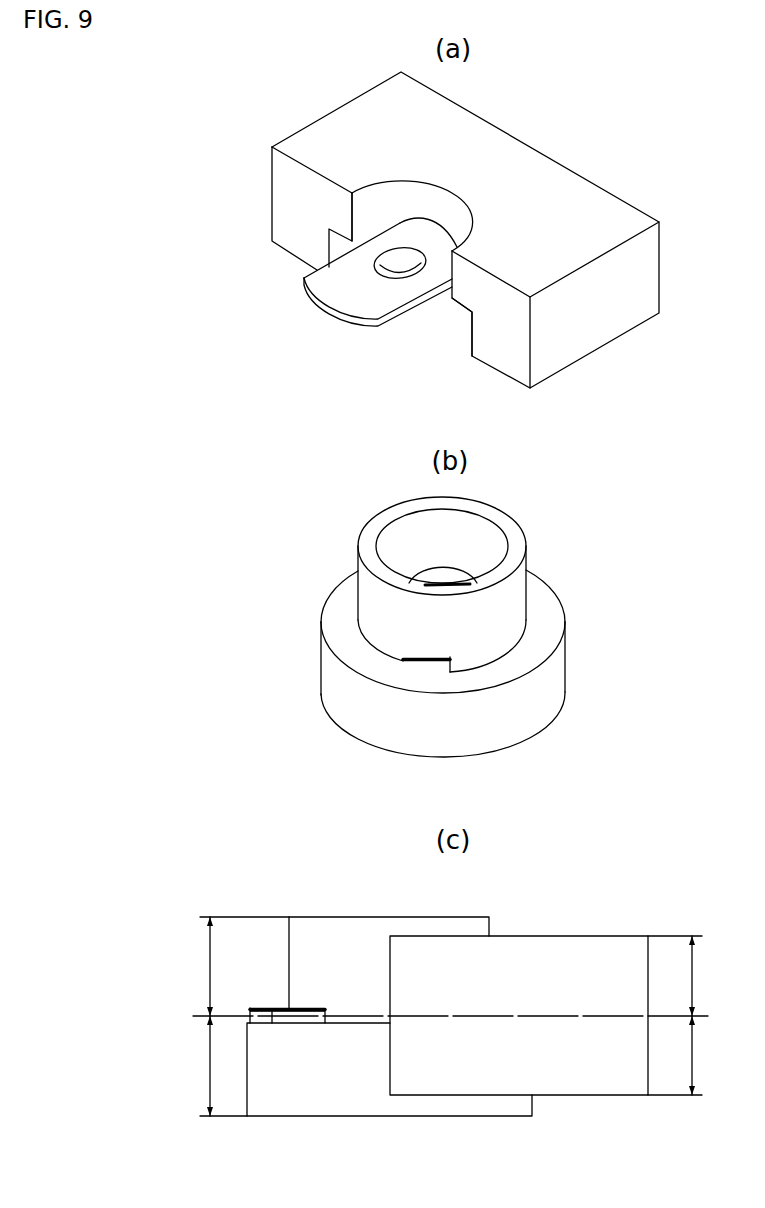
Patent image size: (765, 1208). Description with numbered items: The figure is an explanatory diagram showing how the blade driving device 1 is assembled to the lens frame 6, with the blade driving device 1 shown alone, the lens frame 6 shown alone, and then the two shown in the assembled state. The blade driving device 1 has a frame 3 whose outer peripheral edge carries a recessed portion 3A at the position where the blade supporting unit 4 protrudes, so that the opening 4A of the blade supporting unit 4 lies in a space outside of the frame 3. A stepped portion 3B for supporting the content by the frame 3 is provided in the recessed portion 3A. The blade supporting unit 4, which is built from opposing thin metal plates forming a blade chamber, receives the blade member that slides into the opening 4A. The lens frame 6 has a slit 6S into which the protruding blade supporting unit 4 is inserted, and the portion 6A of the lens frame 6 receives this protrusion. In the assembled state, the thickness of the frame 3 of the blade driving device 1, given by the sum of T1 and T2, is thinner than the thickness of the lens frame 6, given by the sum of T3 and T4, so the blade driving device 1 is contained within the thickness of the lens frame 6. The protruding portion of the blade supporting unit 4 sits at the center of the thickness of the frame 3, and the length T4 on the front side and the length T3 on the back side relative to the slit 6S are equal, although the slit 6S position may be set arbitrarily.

The blade driving device 1 is at (634, 130).
The frame 3 is at (659, 278).
The recessed portion 3A is at (368, 207).
The stepped portion 3B is at (457, 315).
The blade supporting unit 4 is at (343, 322).
The opening 4A is at (398, 268).
The lens frame 6 is at (527, 539).
The base of cylindrical member 6A is at (548, 608).
The slit 6S is at (403, 659).
The thickness T1 is at (686, 976).
The thickness T2 is at (686, 1055).
The length on the back side T3 is at (234, 966).
The length on the front side T4 is at (213, 1066).